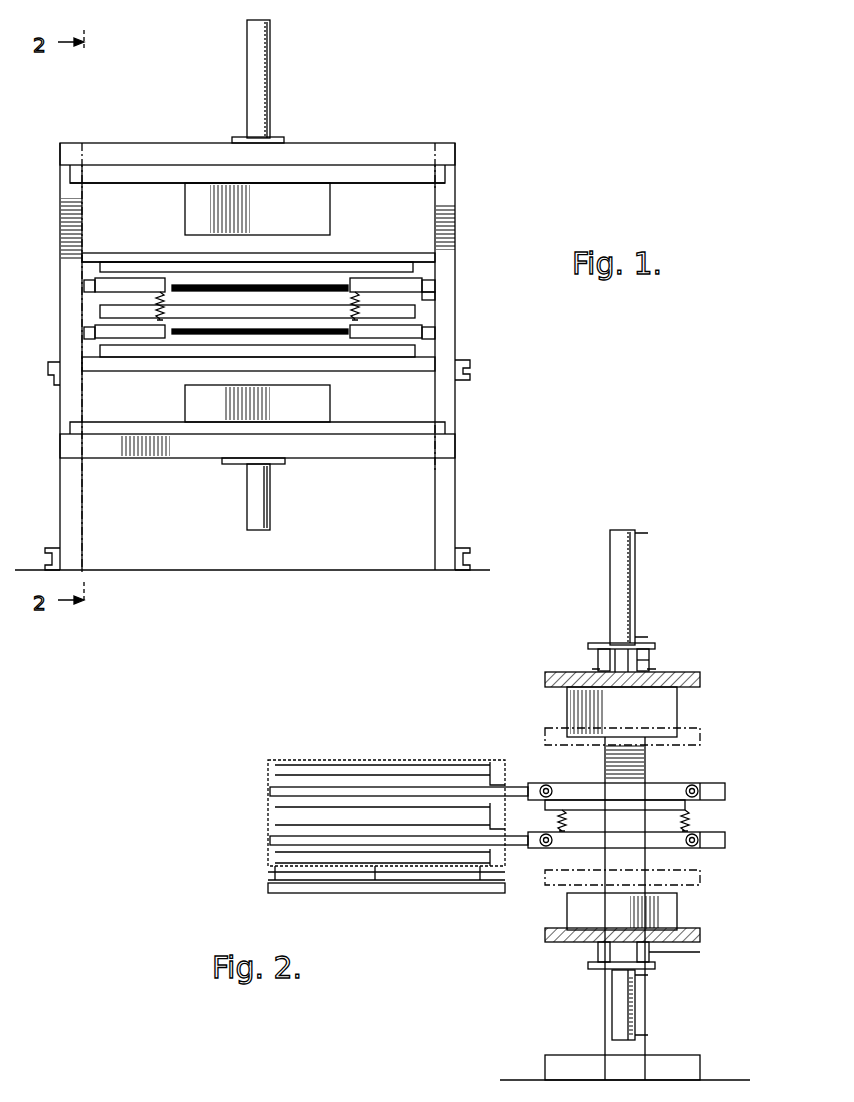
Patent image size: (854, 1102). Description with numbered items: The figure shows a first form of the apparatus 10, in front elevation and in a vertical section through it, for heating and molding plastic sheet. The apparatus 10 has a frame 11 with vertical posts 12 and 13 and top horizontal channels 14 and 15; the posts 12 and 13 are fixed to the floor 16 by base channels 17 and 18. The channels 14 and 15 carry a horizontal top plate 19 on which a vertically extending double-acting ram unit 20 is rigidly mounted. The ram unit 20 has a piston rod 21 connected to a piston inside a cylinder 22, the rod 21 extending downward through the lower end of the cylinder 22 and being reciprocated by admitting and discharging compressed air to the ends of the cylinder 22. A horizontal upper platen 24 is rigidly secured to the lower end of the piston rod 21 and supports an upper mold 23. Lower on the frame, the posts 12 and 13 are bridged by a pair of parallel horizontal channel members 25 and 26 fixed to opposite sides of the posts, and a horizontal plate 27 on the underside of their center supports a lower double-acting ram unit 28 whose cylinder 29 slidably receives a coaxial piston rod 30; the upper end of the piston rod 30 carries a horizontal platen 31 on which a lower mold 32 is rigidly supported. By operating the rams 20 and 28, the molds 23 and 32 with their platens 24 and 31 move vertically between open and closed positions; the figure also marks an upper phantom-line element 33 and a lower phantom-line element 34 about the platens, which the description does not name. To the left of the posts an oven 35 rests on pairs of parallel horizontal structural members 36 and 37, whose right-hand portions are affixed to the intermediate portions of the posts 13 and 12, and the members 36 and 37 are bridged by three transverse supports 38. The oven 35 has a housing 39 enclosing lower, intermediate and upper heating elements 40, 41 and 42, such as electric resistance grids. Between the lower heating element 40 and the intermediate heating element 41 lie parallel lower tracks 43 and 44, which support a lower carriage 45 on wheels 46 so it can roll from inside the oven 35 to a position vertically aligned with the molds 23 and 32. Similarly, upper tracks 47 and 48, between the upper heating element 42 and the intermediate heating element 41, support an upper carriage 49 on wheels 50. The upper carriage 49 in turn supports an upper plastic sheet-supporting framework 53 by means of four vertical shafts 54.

In FIG. 1, the apparatus 10 is at (535, 175).
In FIG. 2, the apparatus 10 is at (718, 705).
In FIG. 1, the frame 11 is at (470, 233).
In FIG. 2, the frame 11 is at (660, 1002).
In FIG. 1, the vertical post 12 is at (448, 312).
In FIG. 2, the vertical post 12 is at (630, 764).
In FIG. 1, the vertical post 13 is at (70, 308).
In FIG. 1, the top horizontal channel 14 is at (458, 156).
In FIG. 2, the top horizontal channel 14 is at (650, 660).
In FIG. 2, the top horizontal channel 15 is at (596, 656).
In FIG. 1, the floor 16 is at (130, 570).
In FIG. 2, the floor 16 is at (712, 1080).
In FIG. 1, the base channel 17 is at (465, 548).
In FIG. 2, the base channel 17 is at (682, 1062).
In FIG. 1, the base channel 18 is at (52, 548).
In FIG. 1, the horizontal top plate 19 is at (282, 140).
In FIG. 2, the horizontal top plate 19 is at (600, 648).
In FIG. 1, the double-acting ram unit 20 is at (238, 60).
In FIG. 2, the double-acting ram unit 20 is at (610, 553).
In FIG. 2, the piston rod 21 is at (612, 660).
In FIG. 1, the cylinder 22 is at (258, 104).
In FIG. 2, the cylinder 22 is at (612, 540).
In FIG. 1, the upper mold 23 is at (322, 210).
In FIG. 2, the upper mold 23 is at (641, 720).
In FIG. 1, the upper platen 24 is at (396, 183).
In FIG. 2, the upper platen 24 is at (700, 680).
In FIG. 1, the horizontal channel member 25 is at (450, 444).
In FIG. 2, the horizontal channel member 25 is at (650, 952).
In FIG. 2, the horizontal channel member 26 is at (608, 952).
In FIG. 1, the horizontal plate 27 is at (282, 470).
In FIG. 2, the horizontal plate 27 is at (590, 970).
In FIG. 1, the lower double-acting ram unit 28 is at (234, 506).
In FIG. 2, the lower double-acting ram unit 28 is at (608, 1022).
In FIG. 1, the cylinder 29 is at (270, 520).
In FIG. 2, the cylinder 29 is at (622, 1000).
In FIG. 2, the piston rod 30 is at (622, 972).
In FIG. 1, the platen 31 is at (368, 422).
In FIG. 2, the platen 31 is at (702, 938).
In FIG. 1, the lower mold 32 is at (322, 408).
In FIG. 2, the lower mold 32 is at (628, 924).
In FIG. 2, the upper guide plate 33 is at (700, 745).
In FIG. 2, the lower guide plate 34 is at (690, 872).
In FIG. 1, the oven 35 is at (246, 250).
In FIG. 2, the oven 35 is at (354, 742).
In FIG. 1, the horizontal structural member 36 is at (54, 384).
In FIG. 1, the horizontal structural member 37 is at (460, 372).
In FIG. 2, the horizontal structural member 37 is at (495, 895).
In FIG. 1, the transverse support 38 is at (466, 362).
In FIG. 2, the transverse support 38 is at (480, 876).
In FIG. 1, the housing 39 is at (335, 262).
In FIG. 2, the housing 39 is at (292, 760).
In FIG. 1, the lower heating element 40 is at (118, 350).
In FIG. 2, the lower heating element 40 is at (290, 856).
In FIG. 1, the intermediate heating element 41 is at (145, 310).
In FIG. 2, the intermediate heating element 41 is at (290, 818).
In FIG. 1, the upper heating element 42 is at (142, 264).
In FIG. 2, the upper heating element 42 is at (290, 768).
In FIG. 1, the lower track 43 is at (435, 342).
In FIG. 2, the lower track 43 is at (710, 842).
In FIG. 1, the lower track 44 is at (84, 340).
In FIG. 1, the lower carriage 45 is at (428, 312).
In FIG. 2, the lower carriage 45 is at (730, 808).
In FIG. 1, the wheel 46 is at (84, 333).
In FIG. 2, the wheel 46 is at (700, 838).
In FIG. 1, the upper track 47 is at (432, 298).
In FIG. 2, the upper track 47 is at (708, 790).
In FIG. 1, the upper track 48 is at (85, 296).
In FIG. 1, the upper carriage 49 is at (372, 278).
In FIG. 2, the upper carriage 49 is at (702, 770).
In FIG. 1, the wheel 50 is at (86, 282).
In FIG. 2, the wheel 50 is at (544, 785).
In FIG. 1, the upper plastic sheet-supporting framework 53 is at (194, 278).
In FIG. 2, the upper plastic sheet-supporting framework 53 is at (606, 804).
In FIG. 1, the vertical shaft 54 is at (152, 298).
In FIG. 2, the vertical shaft 54 is at (556, 816).